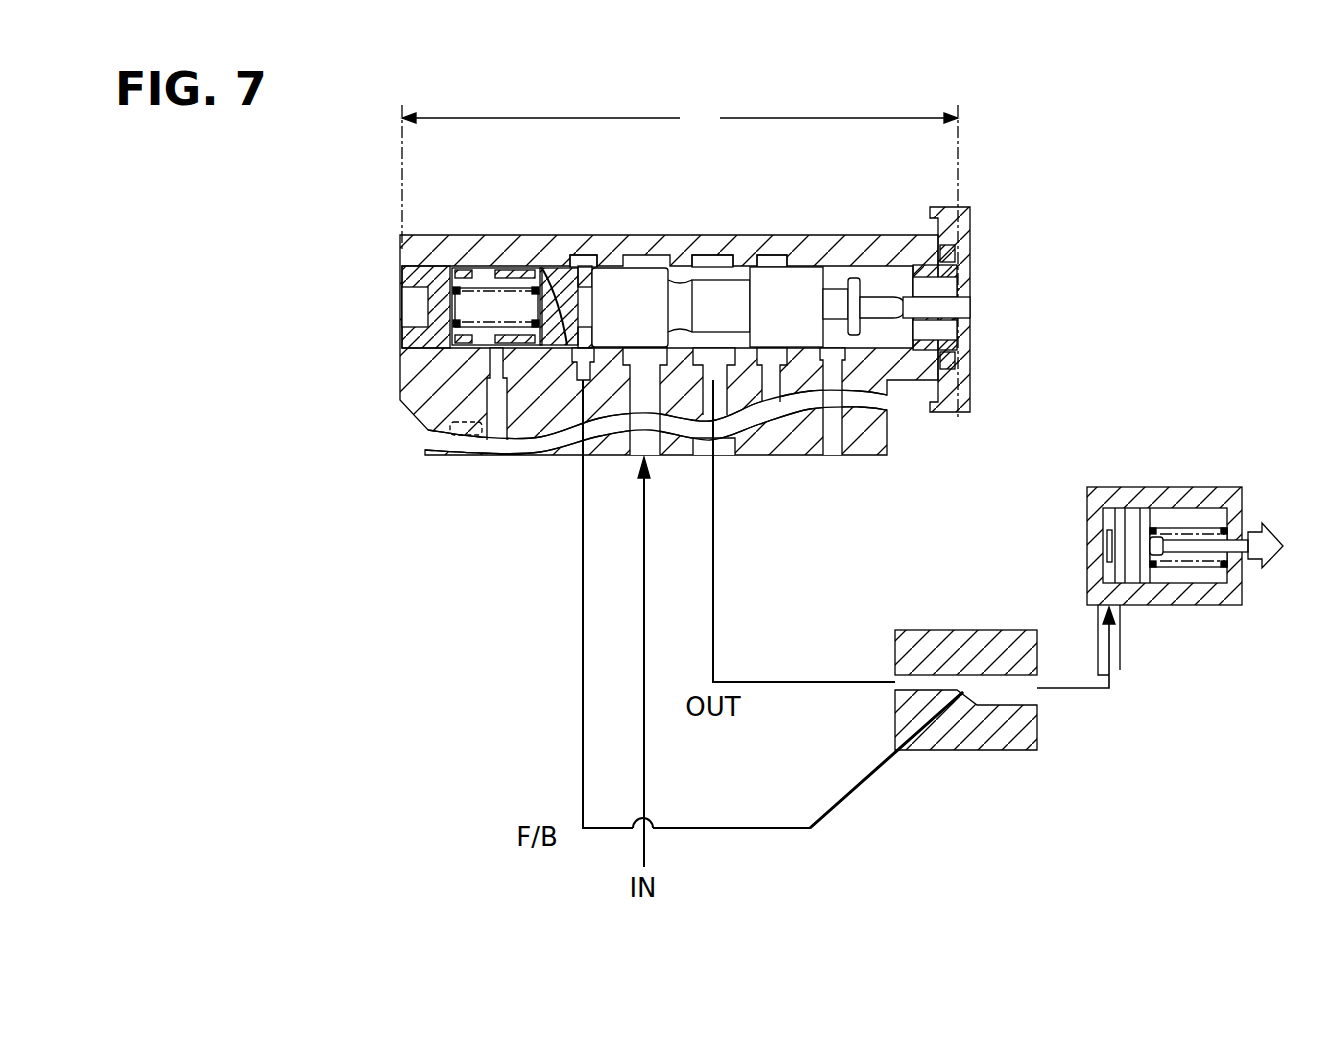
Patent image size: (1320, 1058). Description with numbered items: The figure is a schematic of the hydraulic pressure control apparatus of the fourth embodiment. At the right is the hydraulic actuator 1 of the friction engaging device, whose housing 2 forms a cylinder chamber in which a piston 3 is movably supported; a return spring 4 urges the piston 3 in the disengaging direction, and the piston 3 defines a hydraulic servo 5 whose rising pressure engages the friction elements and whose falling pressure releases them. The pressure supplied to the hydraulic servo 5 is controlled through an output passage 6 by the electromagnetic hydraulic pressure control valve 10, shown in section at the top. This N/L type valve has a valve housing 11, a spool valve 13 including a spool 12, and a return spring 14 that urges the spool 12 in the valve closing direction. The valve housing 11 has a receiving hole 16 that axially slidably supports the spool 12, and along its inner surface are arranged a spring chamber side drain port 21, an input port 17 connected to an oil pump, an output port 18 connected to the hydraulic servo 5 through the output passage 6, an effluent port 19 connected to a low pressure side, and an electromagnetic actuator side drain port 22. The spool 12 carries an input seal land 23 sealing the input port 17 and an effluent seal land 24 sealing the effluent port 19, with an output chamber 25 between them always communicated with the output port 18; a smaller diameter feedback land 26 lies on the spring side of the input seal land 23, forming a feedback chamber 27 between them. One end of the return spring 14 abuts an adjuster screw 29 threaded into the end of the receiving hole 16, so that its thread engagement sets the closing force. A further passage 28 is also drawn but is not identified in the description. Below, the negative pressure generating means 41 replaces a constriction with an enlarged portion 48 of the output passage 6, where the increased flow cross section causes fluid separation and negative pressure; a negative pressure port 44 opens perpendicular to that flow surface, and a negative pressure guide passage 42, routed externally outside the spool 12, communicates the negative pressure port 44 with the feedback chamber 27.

The hydraulic actuator 1 is at (1240, 478).
The housing 2 is at (1185, 493).
The piston 3 is at (1132, 528).
The return spring 4 is at (1183, 567).
The hydraulic servo 5 is at (1106, 518).
The output passage 6 is at (714, 592).
The electromagnetic hydraulic pressure control valve 10 is at (420, 481).
The valve housing 11 is at (511, 246).
The spool 12 is at (724, 288).
The spool valve 13 is at (680, 261).
The return spring 14 is at (488, 280).
The receiving hole 16 is at (808, 272).
The input port 17 is at (634, 450).
The output port 18 is at (702, 448).
The effluent port 19 is at (764, 450).
The spring chamber side drain port 21 is at (503, 446).
The electromagnetic actuator side drain port 22 is at (830, 450).
The input seal land 23 is at (638, 270).
The effluent seal land 24 is at (775, 262).
The output chamber 25 is at (710, 262).
The feedback land 26 is at (566, 300).
The feedback chamber 27 is at (589, 258).
The feedback port 28 is at (578, 450).
The adjuster screw 29 is at (406, 271).
The negative pressure generating means 41 is at (930, 740).
The negative pressure guide passage 42 is at (583, 630).
The negative pressure port 44 is at (958, 705).
The enlarged portion 48 is at (978, 690).